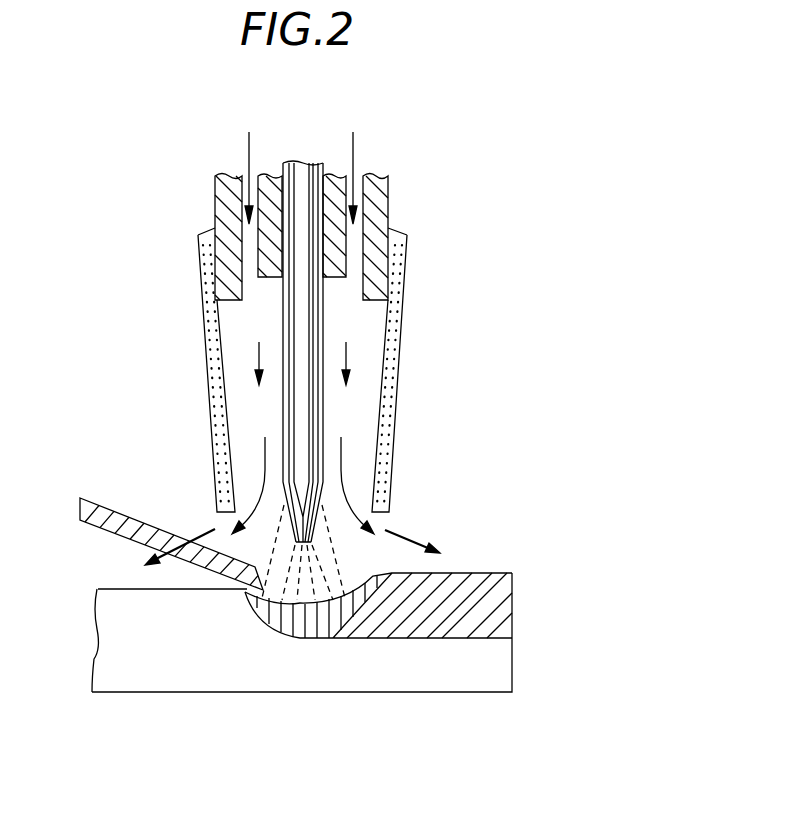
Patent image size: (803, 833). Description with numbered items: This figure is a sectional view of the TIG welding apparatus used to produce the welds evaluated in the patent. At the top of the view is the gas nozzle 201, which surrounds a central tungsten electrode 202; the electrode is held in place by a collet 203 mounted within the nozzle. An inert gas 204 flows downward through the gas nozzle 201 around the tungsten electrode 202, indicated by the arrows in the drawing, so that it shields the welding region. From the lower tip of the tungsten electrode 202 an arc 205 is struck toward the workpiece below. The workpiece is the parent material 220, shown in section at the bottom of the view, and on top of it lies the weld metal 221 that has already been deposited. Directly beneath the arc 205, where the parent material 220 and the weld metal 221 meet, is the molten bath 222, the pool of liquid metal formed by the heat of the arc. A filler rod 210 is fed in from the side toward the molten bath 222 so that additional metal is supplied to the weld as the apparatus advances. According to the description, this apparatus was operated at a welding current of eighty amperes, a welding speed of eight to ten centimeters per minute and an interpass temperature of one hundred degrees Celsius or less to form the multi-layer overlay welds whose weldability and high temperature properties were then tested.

The gas nozzle 201 is at (405, 367).
The tungsten electrode 202 is at (293, 330).
The collet 203 is at (330, 240).
The inert gas 204 is at (353, 148).
The arc 205 is at (335, 580).
The filler rod 210 is at (142, 522).
The parent material 220 is at (425, 675).
The weld metal 221 is at (468, 608).
The molten bath 222 is at (312, 622).